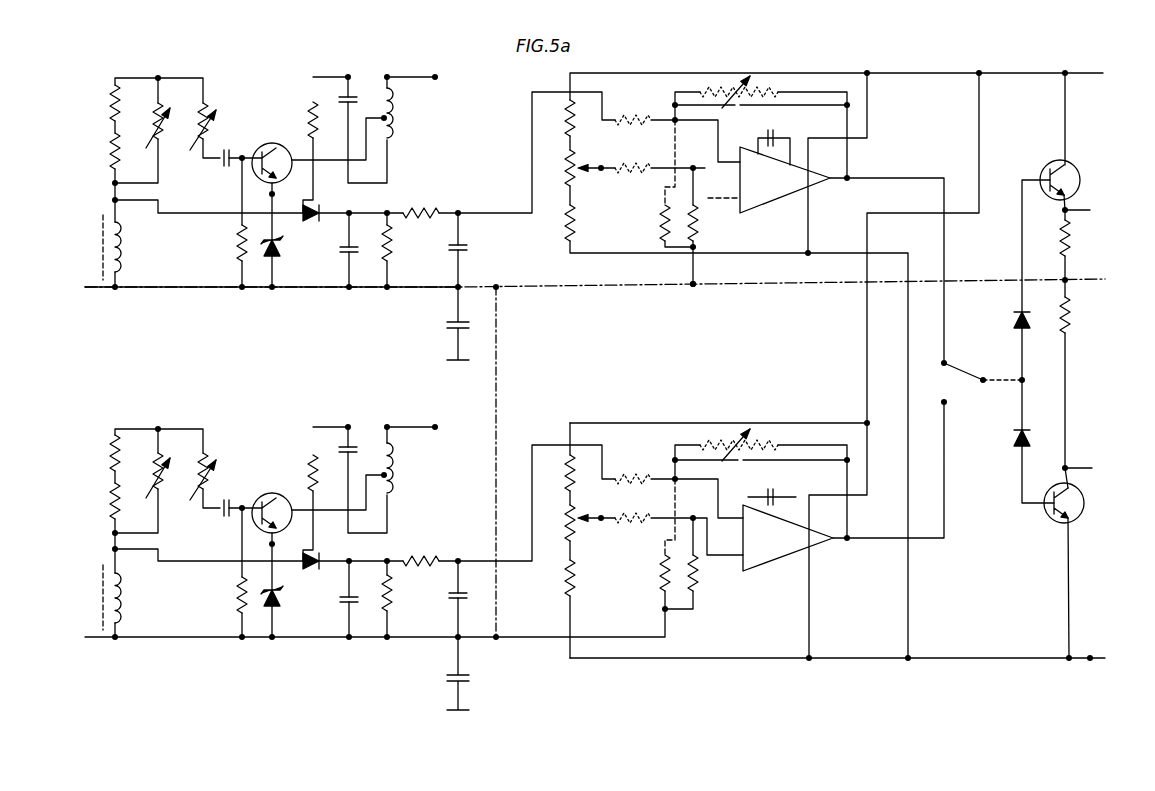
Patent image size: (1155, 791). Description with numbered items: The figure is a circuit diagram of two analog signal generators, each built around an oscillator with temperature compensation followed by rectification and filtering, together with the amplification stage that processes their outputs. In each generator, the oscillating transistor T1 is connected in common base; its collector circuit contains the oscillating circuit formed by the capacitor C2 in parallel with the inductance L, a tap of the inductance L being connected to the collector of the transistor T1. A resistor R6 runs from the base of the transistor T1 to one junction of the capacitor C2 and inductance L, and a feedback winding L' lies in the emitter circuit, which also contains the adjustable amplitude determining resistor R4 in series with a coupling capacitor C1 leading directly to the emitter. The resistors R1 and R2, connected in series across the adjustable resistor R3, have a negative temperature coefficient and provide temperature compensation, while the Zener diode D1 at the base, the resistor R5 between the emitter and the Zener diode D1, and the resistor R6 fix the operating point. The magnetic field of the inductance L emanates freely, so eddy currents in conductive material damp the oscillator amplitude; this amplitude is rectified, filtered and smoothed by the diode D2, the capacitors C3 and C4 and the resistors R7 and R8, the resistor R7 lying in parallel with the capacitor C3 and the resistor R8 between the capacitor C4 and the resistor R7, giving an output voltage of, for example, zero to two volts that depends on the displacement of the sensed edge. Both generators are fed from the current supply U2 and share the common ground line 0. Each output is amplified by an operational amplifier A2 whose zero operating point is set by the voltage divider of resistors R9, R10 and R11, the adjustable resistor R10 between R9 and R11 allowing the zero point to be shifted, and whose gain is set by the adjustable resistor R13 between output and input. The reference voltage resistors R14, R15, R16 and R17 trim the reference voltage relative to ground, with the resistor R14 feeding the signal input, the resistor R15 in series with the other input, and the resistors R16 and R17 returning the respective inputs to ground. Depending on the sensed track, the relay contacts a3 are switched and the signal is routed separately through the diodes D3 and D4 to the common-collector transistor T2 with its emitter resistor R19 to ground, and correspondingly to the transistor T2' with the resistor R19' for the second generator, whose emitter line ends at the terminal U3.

The temperature-compensation resistor R1 is at (109, 502).
The temperature-compensation resistor R2 is at (111, 453).
The adjustable resistor R3 is at (149, 462).
The adjustable amplitude determining resistor R4 is at (220, 301).
The resistor R5 is at (236, 601).
The resistor R6 is at (327, 302).
The resistor R7 is at (405, 590).
The resistor R8 is at (424, 558).
The voltage divider resistor R9 is at (568, 488).
The adjustable resistor R10 is at (576, 345).
The voltage divider resistor R11 is at (549, 402).
The adjustable resistor R13 is at (720, 427).
The reference voltage resistor R14 is at (633, 284).
The reference voltage resistor R15 is at (631, 343).
The reference voltage resistor R16 is at (659, 586).
The reference voltage resistor R17 is at (712, 582).
The resistor R19 is at (1087, 238).
The resistor R19' is at (1090, 315).
The coupling capacitor C1 is at (220, 518).
The capacitor C2 is at (346, 442).
The capacitor C3 is at (346, 606).
The capacitor C4 is at (464, 604).
The inductance L is at (400, 290).
The feedback winding L' is at (131, 422).
The oscillating transistor T1 is at (271, 492).
The transistor T2 is at (1051, 165).
The transistor T2' is at (1059, 516).
The Zener diode D1 is at (284, 590).
The diode D2 is at (312, 557).
The diode D3 is at (1012, 320).
The diode D4 is at (1012, 440).
The operational amplifier A2 is at (786, 350).
The current supply U2 is at (450, 253).
The output voltage terminal U3 is at (1093, 691).
The relay contacts a3 is at (945, 385).
The common ground line 0 is at (497, 356).